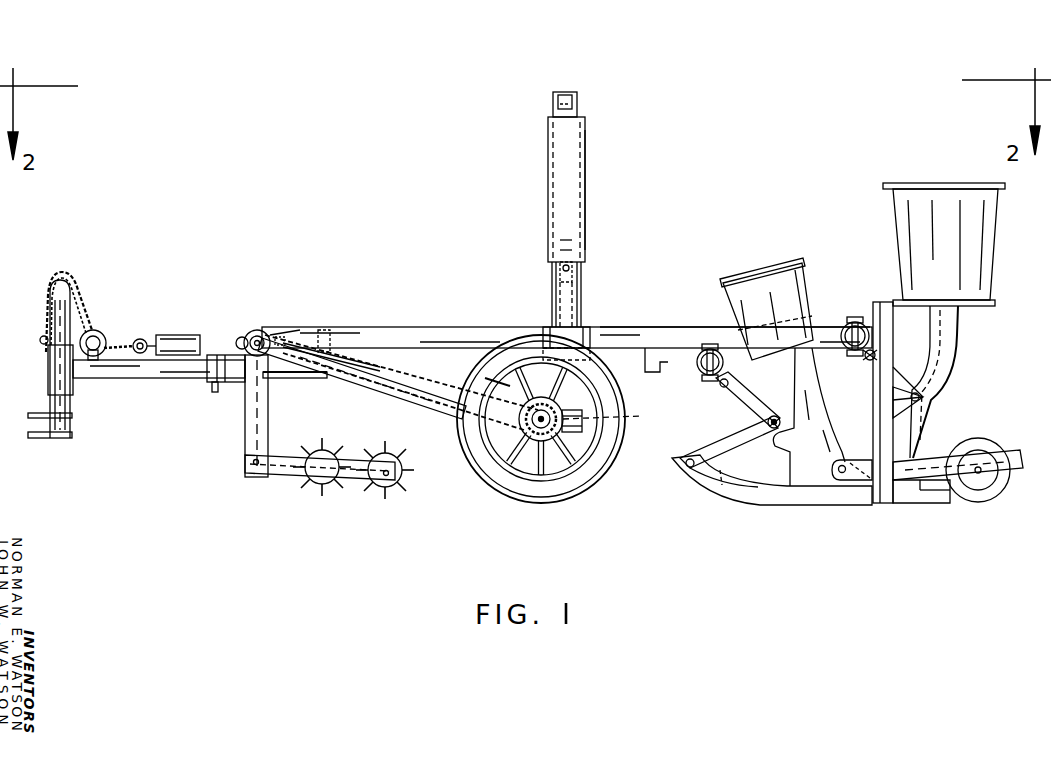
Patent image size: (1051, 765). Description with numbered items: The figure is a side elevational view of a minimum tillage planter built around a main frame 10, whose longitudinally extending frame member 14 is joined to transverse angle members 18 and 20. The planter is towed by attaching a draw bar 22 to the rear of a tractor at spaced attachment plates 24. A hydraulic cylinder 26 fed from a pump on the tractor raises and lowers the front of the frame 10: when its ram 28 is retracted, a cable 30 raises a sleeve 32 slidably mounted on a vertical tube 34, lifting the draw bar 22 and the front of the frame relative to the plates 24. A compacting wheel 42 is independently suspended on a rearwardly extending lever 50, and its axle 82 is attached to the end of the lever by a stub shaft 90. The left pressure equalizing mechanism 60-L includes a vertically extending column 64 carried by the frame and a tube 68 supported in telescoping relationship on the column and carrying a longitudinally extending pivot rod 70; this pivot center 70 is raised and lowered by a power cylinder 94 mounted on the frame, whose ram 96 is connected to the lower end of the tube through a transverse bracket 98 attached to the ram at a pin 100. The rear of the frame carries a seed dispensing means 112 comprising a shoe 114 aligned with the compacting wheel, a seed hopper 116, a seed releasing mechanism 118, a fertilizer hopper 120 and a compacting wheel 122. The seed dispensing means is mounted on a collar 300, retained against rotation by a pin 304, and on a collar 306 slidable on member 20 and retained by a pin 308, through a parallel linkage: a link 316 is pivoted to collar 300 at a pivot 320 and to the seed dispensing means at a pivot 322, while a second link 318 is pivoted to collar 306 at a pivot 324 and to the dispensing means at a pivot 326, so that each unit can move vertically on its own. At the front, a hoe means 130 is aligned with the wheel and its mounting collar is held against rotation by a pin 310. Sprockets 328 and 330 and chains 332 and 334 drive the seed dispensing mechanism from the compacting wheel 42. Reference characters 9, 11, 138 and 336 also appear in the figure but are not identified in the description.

The bar 9 is at (290, 379).
The main frame 10 is at (400, 325).
The clamp 11 is at (215, 392).
The longitudinally extending frame member 14 is at (640, 327).
The transverse angle member 18 is at (657, 372).
The transverse angle member 20 is at (850, 322).
The draw bar 22 is at (148, 379).
The attachment plates 24 is at (48, 438).
The hydraulic cylinder 26 is at (186, 335).
The ram 28 is at (142, 339).
The cable 30 is at (78, 312).
The sleeve 32 is at (48, 376).
The vertical tube 34 is at (70, 420).
The compacting wheel 42 is at (557, 427).
The lever 50 is at (392, 384).
The left pressure equalizing mechanism 60-L is at (572, 207).
The vertically extending column 64 is at (582, 285).
The tube 68 is at (586, 200).
The pivot rod 70 is at (570, 92).
The axle 82 is at (541, 432).
The stub shaft 90 is at (615, 414).
The power cylinder 94 is at (574, 302).
The ram 96 is at (556, 290).
The transverse bracket 98 is at (575, 252).
The pin 100 is at (556, 270).
The seed dispensing means 112 is at (792, 258).
The shoe 114 is at (722, 497).
The seed hopper 116 is at (733, 302).
The seed releasing mechanism 118 is at (820, 490).
The fertilizer hopper 120 is at (995, 265).
The compacting wheel 122 is at (982, 440).
The hoe means 130 is at (290, 478).
The pivot pin 138 is at (259, 336).
The collar 300 is at (705, 377).
The pin 304 is at (705, 343).
The collar 306 is at (848, 356).
The pin 308 is at (860, 316).
The pin 310 is at (240, 337).
The link 316 is at (745, 427).
The second link 318 is at (912, 390).
The pivot 320 is at (740, 392).
The pivot 322 is at (772, 430).
The pivot 324 is at (868, 362).
The pivot 326 is at (934, 394).
The sprocket 328 is at (282, 333).
The sprocket 330 is at (535, 430).
The chain 332 is at (420, 380).
The chain 334 is at (296, 330).
The bearing housing 336 is at (258, 330).